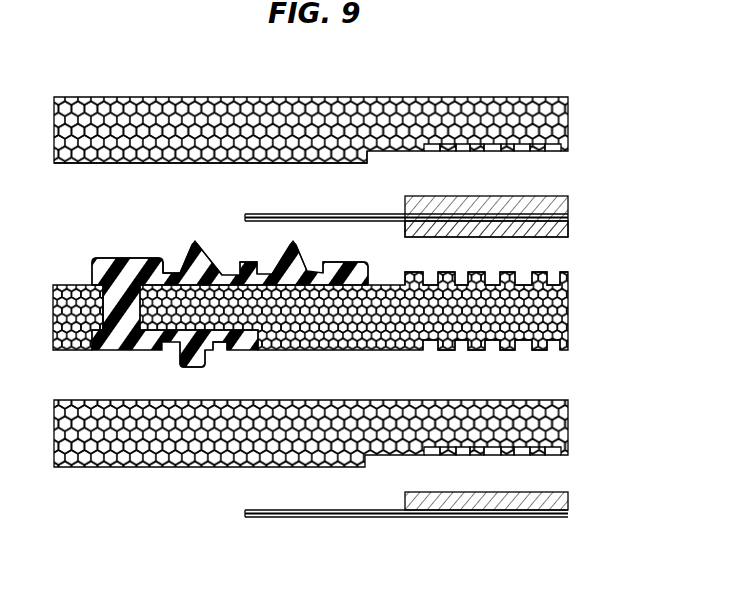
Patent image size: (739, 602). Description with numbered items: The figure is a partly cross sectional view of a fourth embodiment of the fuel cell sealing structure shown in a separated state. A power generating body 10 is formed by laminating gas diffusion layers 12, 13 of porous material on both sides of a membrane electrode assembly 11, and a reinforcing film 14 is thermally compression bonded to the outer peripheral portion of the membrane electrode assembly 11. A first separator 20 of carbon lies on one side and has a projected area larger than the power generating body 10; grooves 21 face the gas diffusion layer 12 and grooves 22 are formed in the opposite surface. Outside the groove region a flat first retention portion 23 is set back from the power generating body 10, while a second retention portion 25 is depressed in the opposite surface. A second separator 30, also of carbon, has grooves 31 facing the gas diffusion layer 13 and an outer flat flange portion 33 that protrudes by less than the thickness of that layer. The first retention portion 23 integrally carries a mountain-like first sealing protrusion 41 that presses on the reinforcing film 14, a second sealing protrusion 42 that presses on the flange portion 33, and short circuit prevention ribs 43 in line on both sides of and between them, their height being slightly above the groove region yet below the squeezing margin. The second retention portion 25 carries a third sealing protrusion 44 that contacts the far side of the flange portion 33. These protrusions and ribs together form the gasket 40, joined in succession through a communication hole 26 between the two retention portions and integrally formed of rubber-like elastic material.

The power generating body 10 is at (434, 358).
The membrane electrode assembly 11 is at (406, 369).
The gas diffusion layer 12 is at (487, 230).
The gas diffusion layer 13 is at (481, 335).
The reinforcing film 14 is at (350, 222).
The first separator 20 is at (336, 309).
The grooves 21 is at (523, 272).
The grooves 22 is at (520, 351).
The first retention portion 23 is at (178, 263).
The second retention portion 25 is at (220, 352).
The communication hole 26 is at (92, 282).
The second separator 30 is at (339, 270).
The grooves 31 is at (462, 152).
The flange portion 33 is at (183, 164).
The gasket 40 is at (243, 287).
The first sealing protrusion 41 is at (287, 260).
The second sealing protrusion 42 is at (197, 240).
The short circuit prevention rib 43 is at (100, 258).
The third sealing protrusion 44 is at (190, 366).